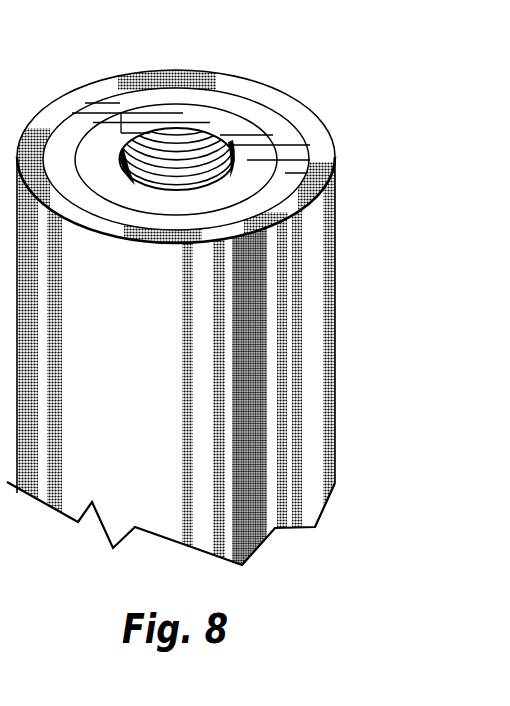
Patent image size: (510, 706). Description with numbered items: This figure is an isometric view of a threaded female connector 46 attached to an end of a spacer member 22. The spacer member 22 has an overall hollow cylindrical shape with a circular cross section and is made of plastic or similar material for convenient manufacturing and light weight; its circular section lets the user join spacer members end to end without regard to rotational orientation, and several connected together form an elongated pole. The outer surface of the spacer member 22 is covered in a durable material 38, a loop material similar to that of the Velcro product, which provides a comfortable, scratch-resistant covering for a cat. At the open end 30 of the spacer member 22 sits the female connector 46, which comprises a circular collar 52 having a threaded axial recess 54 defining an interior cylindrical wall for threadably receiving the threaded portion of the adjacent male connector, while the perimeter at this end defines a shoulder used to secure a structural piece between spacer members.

The spacer member 22 is at (335, 293).
The open end 30 is at (268, 117).
The durable material 38 is at (252, 407).
The threaded female connector 46 is at (116, 114).
The circular collar 52 is at (164, 117).
The threaded axial recess 54 is at (228, 150).